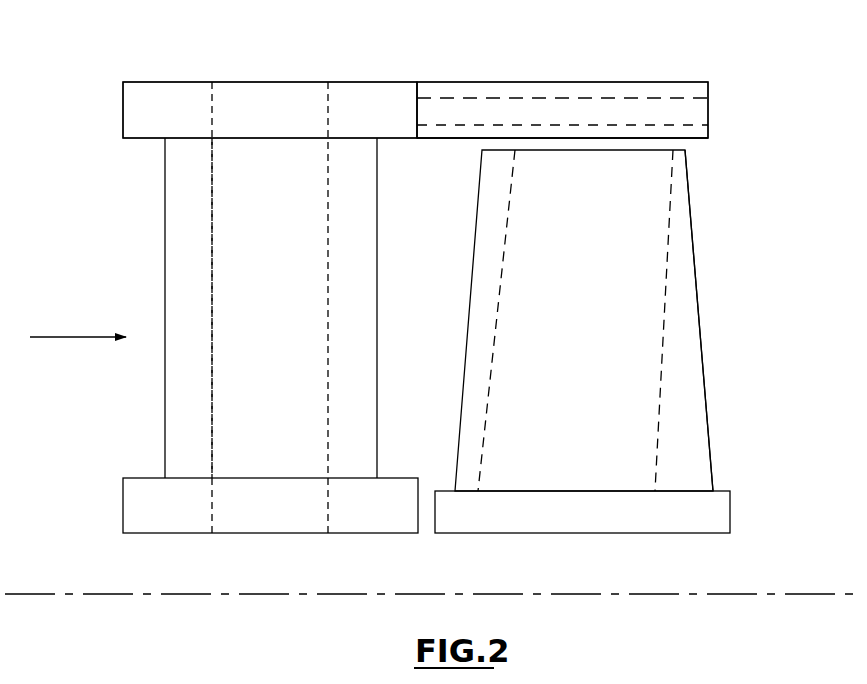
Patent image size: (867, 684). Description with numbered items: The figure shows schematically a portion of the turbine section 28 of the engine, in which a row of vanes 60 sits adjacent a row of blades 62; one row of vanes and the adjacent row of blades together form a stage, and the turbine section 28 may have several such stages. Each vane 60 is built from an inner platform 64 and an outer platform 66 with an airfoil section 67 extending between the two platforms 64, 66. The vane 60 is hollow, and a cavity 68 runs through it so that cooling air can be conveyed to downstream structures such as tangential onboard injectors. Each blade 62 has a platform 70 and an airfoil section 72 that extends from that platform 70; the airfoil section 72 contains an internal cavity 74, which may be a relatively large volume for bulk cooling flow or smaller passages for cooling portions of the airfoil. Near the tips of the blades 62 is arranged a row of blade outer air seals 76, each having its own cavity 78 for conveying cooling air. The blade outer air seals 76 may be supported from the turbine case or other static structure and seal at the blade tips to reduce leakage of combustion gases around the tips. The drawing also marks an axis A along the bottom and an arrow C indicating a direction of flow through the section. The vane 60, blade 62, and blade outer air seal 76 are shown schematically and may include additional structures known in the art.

The turbine section 28 is at (100, 176).
The vane 60 is at (295, 80).
The blade 62 is at (716, 467).
The inner platform 64 is at (123, 508).
The outer platform 66 is at (123, 110).
The airfoil section 67 is at (163, 245).
The cavity 68 is at (212, 290).
The platform 70 is at (730, 512).
The airfoil section 72 is at (696, 282).
The internal cavity 74 is at (661, 356).
The blade outer air seal 76 is at (701, 142).
The cavity 78 is at (545, 98).
The axis A is at (780, 594).
The flow direction C is at (70, 337).